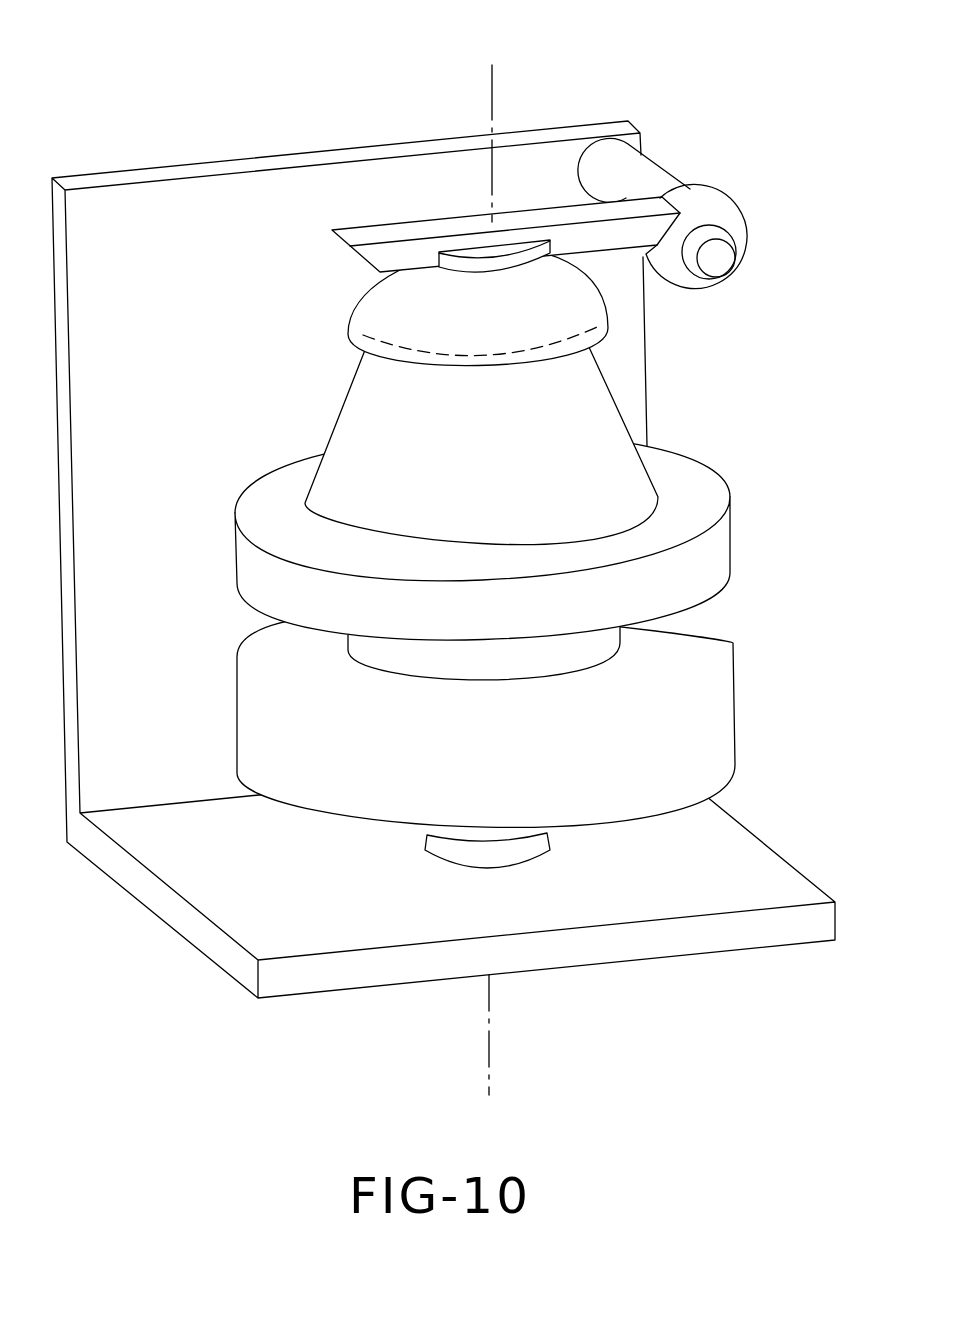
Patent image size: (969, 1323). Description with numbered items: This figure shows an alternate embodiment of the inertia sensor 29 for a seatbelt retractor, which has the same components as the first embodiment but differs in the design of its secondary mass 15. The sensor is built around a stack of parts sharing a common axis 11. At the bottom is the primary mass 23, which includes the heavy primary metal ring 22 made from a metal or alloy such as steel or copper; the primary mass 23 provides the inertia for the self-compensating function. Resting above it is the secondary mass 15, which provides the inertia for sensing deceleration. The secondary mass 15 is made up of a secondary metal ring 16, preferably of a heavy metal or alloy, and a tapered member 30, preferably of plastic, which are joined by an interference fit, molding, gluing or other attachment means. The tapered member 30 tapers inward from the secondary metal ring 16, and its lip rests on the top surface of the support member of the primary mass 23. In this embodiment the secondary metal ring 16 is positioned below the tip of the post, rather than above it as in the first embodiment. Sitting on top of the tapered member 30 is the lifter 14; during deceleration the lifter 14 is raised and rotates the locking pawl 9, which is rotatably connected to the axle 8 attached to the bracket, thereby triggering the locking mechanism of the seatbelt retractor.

The axle 8 is at (645, 178).
The locking pawl 9 is at (522, 220).
The longitudinal axis 11 is at (492, 65).
The lifter 14 is at (573, 315).
The secondary mass 15 is at (660, 457).
The secondary metal ring 16 is at (527, 531).
The primary metal ring 22 is at (715, 753).
The primary mass 23 is at (530, 725).
The inertia sensor 29 is at (795, 140).
The tapered member 30 is at (588, 415).